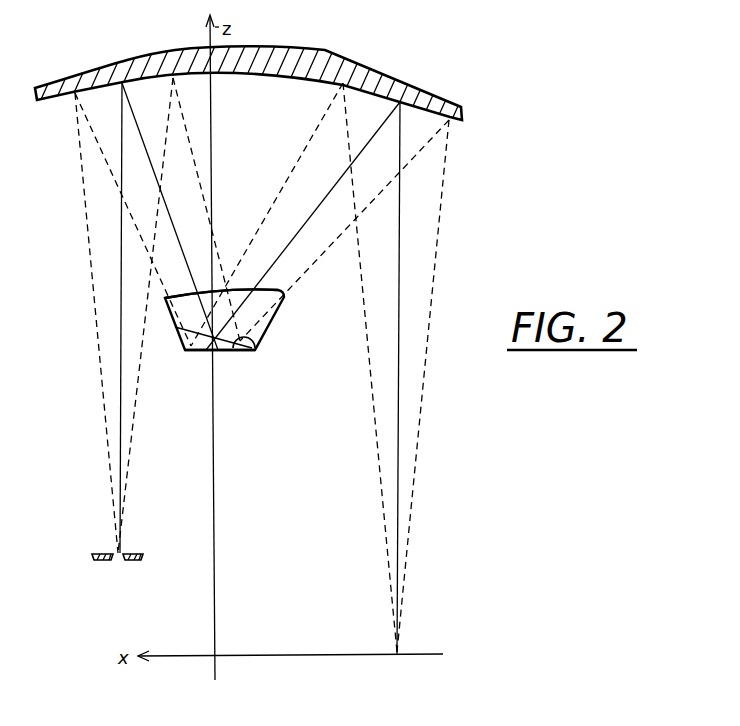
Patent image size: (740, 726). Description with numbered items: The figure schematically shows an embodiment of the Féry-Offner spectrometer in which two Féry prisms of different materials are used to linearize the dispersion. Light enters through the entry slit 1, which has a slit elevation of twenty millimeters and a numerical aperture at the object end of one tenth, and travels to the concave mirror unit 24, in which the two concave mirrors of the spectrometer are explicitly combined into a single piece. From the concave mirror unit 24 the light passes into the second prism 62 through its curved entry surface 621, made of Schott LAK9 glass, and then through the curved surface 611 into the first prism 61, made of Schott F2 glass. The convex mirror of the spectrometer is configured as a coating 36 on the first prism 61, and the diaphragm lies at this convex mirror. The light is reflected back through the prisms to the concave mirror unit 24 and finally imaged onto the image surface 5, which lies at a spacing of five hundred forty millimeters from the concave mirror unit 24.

The concave mirror unit 24 is at (316, 50).
The entry slit 1 is at (139, 551).
The image surface 5 is at (318, 653).
The second Féry prism 62 is at (270, 317).
The entry surface of second prism 621 is at (270, 290).
The surface of first prism 611 is at (248, 338).
The first Féry prism 61 is at (237, 352).
The convex mirror coating 36 is at (228, 352).